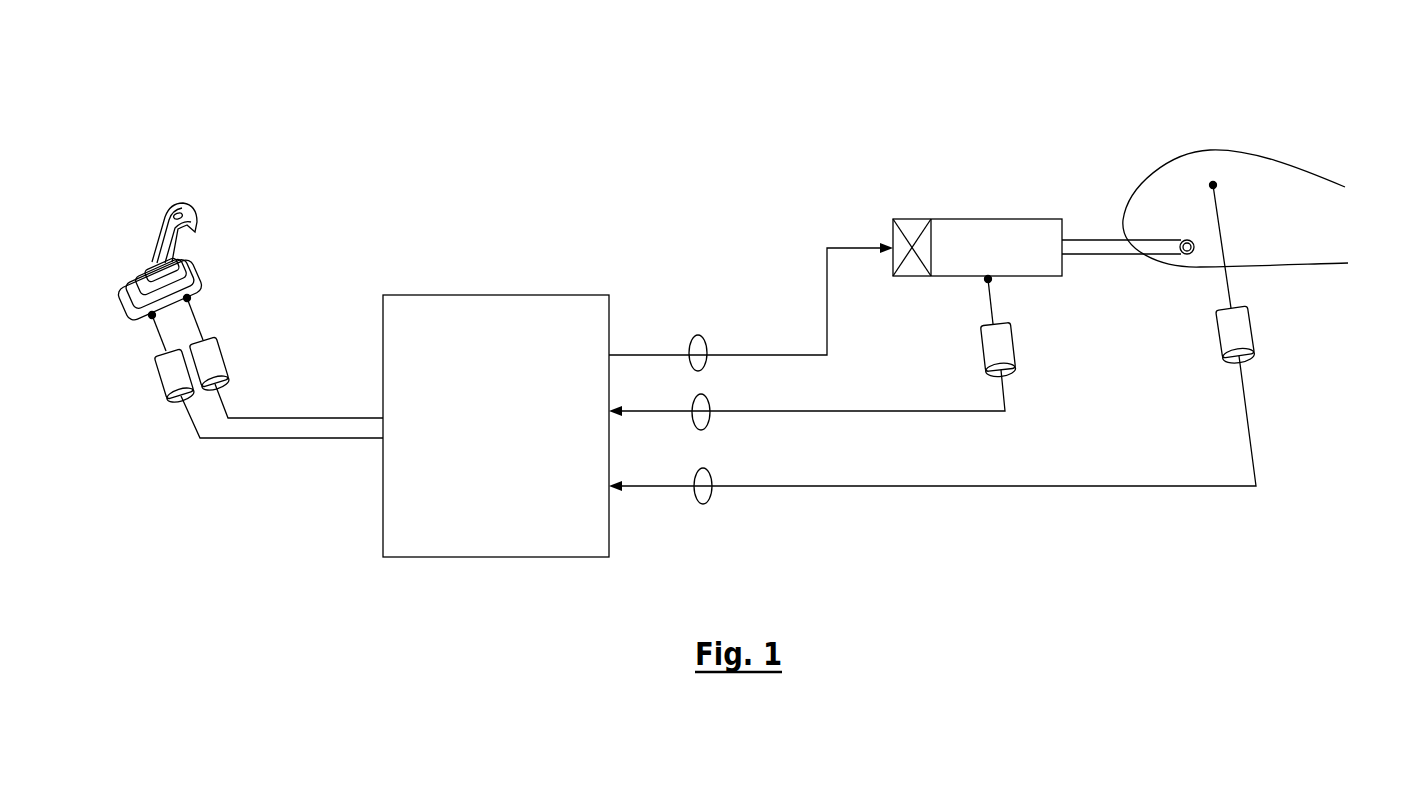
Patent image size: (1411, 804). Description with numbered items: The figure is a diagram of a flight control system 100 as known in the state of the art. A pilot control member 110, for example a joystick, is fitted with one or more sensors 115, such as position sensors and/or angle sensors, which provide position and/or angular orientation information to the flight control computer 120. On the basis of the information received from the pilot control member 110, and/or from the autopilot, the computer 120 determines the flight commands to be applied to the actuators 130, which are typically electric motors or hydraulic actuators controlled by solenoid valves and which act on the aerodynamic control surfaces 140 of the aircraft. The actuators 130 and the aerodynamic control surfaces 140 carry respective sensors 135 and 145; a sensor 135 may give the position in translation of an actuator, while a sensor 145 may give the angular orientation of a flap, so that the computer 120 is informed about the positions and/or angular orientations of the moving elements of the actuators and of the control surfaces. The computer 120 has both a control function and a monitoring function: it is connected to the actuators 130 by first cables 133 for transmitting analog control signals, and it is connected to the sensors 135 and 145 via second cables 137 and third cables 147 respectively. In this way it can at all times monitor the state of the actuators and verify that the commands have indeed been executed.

The flight control system 100 is at (512, 181).
The pilot control member 110 is at (193, 203).
The sensors 115 is at (225, 350).
The flight control computer 120 is at (496, 426).
The actuators 130 is at (973, 218).
The first cables 133 is at (705, 370).
The sensor 135 is at (1013, 342).
The second cables 137 is at (708, 428).
The aerodynamic control surfaces 140 is at (1198, 147).
The sensor 145 is at (1250, 340).
The third cables 147 is at (710, 502).